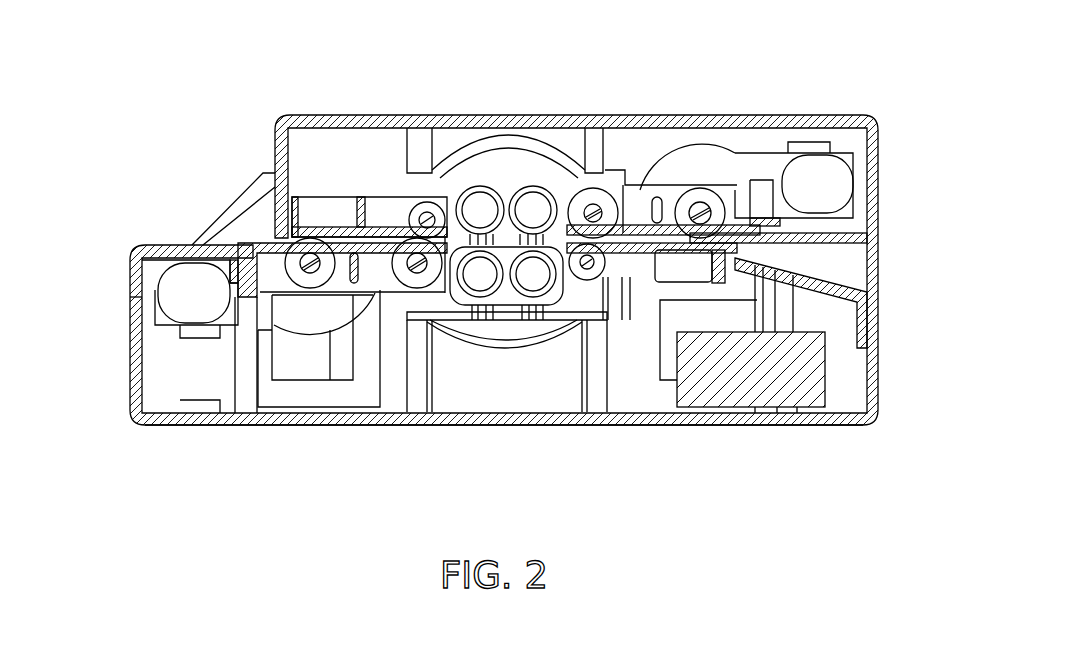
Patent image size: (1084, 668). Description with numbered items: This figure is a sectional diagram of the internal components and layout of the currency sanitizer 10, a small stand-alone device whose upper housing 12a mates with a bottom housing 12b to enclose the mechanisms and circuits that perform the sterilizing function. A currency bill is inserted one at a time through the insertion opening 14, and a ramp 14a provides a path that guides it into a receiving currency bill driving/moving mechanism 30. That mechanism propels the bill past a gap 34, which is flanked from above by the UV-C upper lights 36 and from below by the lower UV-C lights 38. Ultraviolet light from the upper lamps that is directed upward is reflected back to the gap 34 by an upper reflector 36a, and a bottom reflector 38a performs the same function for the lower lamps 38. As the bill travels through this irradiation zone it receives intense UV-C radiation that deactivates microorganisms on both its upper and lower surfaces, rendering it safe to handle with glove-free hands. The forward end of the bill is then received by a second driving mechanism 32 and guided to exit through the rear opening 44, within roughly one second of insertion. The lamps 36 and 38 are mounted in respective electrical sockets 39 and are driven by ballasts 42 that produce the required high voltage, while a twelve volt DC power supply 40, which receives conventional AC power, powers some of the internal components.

The currency sanitizer 10 is at (812, 80).
The upper housing 12a is at (872, 128).
The bottom housing 12b is at (877, 408).
The insertion opening 14 is at (878, 240).
The ramp 14a is at (847, 262).
The currency bill driving/moving mechanism 30 is at (702, 197).
The second driving mechanism 32 is at (327, 223).
The gap 34 is at (545, 232).
The UV-C upper lights 36 is at (480, 210).
The upper reflector 36a is at (565, 147).
The lower UV-C lights 38 is at (480, 274).
The bottom reflector 38a is at (513, 345).
The electrical sockets 39 is at (450, 400).
The 12 volt DC power supply 40 is at (740, 392).
The ballasts 42 is at (307, 372).
The rear opening 44 is at (130, 297).